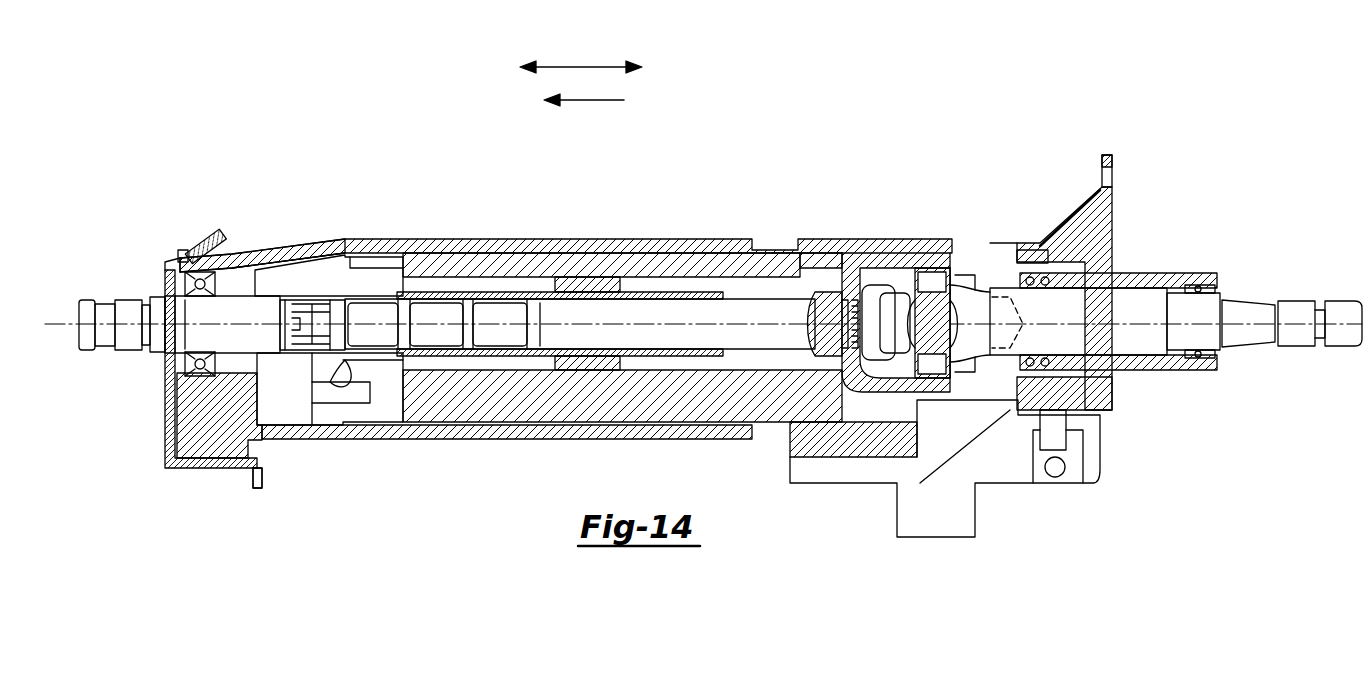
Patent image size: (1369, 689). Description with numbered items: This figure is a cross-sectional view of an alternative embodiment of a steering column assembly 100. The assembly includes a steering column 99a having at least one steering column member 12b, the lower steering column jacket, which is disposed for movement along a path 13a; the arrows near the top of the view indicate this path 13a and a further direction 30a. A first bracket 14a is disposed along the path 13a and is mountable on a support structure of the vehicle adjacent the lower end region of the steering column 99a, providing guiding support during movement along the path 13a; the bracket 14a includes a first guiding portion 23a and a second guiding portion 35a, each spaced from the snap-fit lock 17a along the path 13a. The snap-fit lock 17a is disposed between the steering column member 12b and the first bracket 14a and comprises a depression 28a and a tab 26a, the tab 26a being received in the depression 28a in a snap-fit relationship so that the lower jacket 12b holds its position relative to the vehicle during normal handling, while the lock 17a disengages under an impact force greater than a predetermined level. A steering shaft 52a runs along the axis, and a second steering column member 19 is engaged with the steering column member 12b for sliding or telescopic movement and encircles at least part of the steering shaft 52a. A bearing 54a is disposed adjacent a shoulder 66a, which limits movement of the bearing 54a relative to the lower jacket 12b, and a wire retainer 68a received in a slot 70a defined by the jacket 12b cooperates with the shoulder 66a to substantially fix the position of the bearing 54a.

The path 13a is at (600, 67).
The direction of collapse 30a is at (592, 100).
The snap-fit lock 17a is at (156, 196).
The tab 26a is at (180, 238).
The wire retainer 68a is at (240, 268).
The slot 70a is at (235, 264).
The depression 28a is at (165, 268).
The steering column member 12b is at (518, 239).
The steering column assembly 100 is at (928, 192).
The steering column 99a is at (1148, 148).
The steering shaft 52a is at (73, 335).
The shoulder 66a is at (195, 372).
The second guiding portion 35a is at (148, 456).
The bearing 54a is at (228, 372).
The first bracket 14a is at (265, 480).
The first guiding portion 23a is at (256, 518).
The second steering column member 19 is at (818, 437).